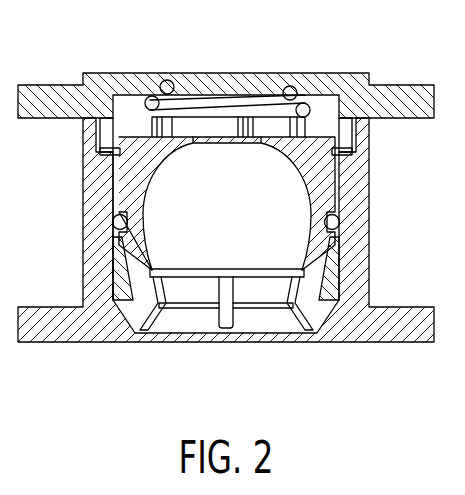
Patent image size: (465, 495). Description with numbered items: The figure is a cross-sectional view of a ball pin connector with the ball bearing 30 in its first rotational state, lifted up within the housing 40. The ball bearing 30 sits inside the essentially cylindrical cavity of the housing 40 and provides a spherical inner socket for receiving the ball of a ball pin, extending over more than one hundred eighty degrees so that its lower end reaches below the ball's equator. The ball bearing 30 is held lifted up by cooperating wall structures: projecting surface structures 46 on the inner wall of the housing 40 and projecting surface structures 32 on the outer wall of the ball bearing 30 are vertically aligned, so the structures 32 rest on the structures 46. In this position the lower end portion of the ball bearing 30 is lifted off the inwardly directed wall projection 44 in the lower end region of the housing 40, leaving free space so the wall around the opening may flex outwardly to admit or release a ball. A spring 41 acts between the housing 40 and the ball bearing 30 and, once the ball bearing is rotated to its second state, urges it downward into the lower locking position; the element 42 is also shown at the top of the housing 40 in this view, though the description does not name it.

The ball bearing 30 is at (158, 175).
The projecting surface structures 32 is at (113, 186).
The housing 40 is at (368, 211).
The spring 41 is at (206, 106).
The cover plate 42 is at (318, 73).
The inwardly directed wall projection 44 is at (304, 322).
The projecting surface structures 46 is at (112, 222).